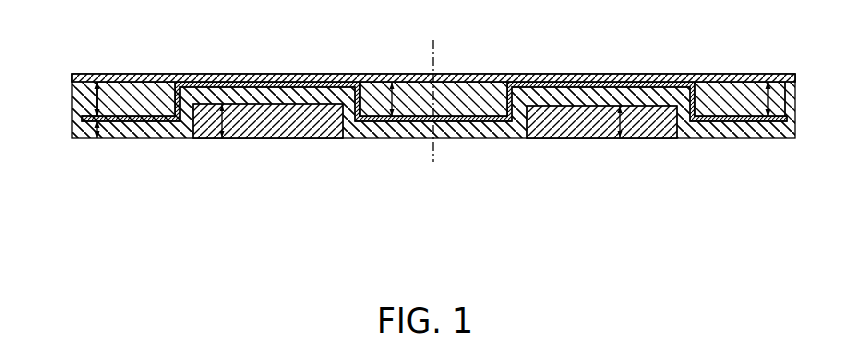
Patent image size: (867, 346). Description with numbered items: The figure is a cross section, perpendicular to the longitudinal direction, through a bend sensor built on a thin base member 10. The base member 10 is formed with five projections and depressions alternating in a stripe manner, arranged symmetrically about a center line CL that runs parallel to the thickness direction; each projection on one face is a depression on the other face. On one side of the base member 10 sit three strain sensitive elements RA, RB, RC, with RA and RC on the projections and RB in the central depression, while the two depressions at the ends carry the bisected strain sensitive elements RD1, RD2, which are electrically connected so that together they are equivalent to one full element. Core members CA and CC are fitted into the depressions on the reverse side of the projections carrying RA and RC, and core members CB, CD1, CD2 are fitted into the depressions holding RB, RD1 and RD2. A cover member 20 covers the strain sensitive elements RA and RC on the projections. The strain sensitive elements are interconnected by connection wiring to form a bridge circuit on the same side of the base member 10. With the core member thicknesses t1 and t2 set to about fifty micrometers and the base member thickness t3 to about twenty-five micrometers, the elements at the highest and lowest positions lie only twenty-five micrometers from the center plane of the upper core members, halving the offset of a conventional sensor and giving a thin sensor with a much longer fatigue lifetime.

The base member 10 is at (510, 130).
The cover member 20 is at (686, 80).
The strain sensitive element RA is at (603, 80).
The strain sensitive element RB is at (452, 138).
The strain sensitive element RC is at (238, 82).
The bisected strain sensitive element RD1 is at (750, 120).
The bisected strain sensitive element RD2 is at (115, 82).
The core member CA is at (577, 130).
The core member CB is at (385, 95).
The core member CC is at (265, 138).
The core member CD1 is at (718, 88).
The core member CD2 is at (155, 88).
The center line CL is at (435, 53).
The thickness of the core members t1 is at (70, 83).
The thickness of the core members t2 is at (193, 138).
The thickness of the base member t3 is at (73, 138).